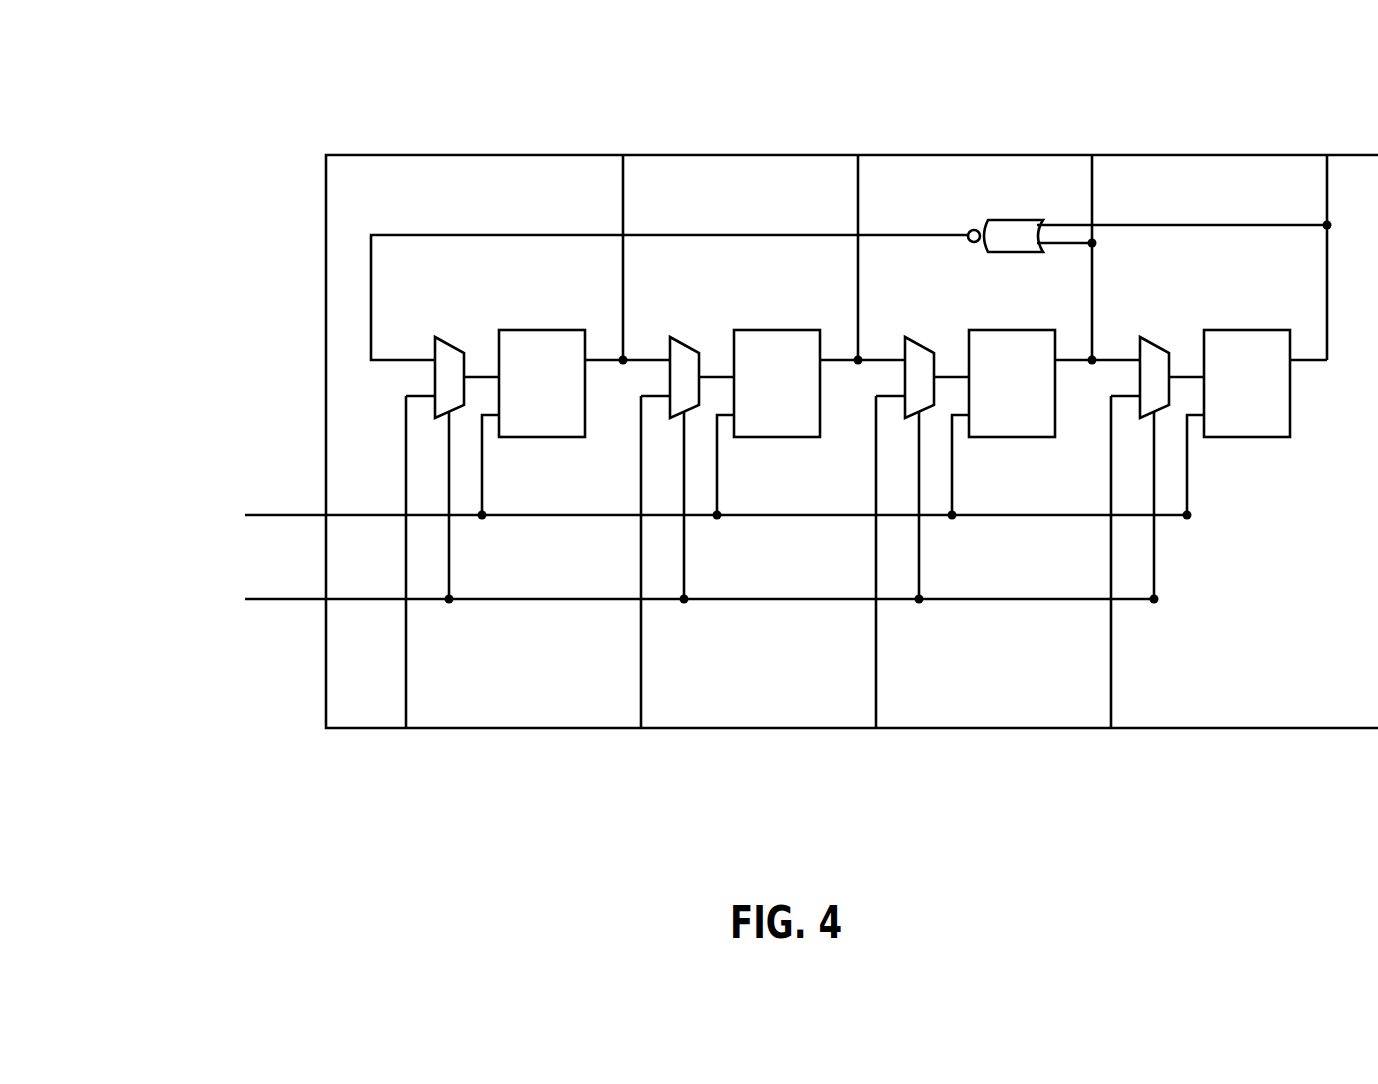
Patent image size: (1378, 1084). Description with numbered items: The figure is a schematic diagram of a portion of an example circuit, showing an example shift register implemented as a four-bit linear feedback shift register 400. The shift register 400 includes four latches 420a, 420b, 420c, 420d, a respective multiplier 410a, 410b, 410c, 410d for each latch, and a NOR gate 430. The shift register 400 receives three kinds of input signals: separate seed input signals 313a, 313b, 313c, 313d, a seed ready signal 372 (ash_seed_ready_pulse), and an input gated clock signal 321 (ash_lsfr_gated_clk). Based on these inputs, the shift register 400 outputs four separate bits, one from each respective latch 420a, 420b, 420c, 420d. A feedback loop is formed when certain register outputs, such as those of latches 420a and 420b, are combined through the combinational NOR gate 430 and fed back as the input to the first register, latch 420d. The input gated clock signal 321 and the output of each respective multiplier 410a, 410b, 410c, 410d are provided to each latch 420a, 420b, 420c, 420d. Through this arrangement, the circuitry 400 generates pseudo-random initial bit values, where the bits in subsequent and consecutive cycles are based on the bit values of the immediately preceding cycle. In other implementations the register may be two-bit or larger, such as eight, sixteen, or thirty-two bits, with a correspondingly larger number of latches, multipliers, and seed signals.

The linear feedback shift register 400 is at (160, 93).
The multiplier 410a is at (1156, 343).
The multiplier 410b is at (923, 343).
The multiplier 410c is at (688, 343).
The multiplier 410d is at (453, 343).
The latch 420a is at (1228, 437).
The latch 420b is at (993, 437).
The latch 420c is at (758, 437).
The latch 420d is at (523, 437).
The NOR gate 430 is at (1006, 220).
The input gated clock signal 321 is at (181, 495).
The seed ready signal 372 is at (190, 627).
The seed input signal 313a is at (1102, 778).
The seed input signal 313b is at (868, 778).
The seed input signal 313c is at (635, 778).
The seed input signal 313d is at (400, 778).